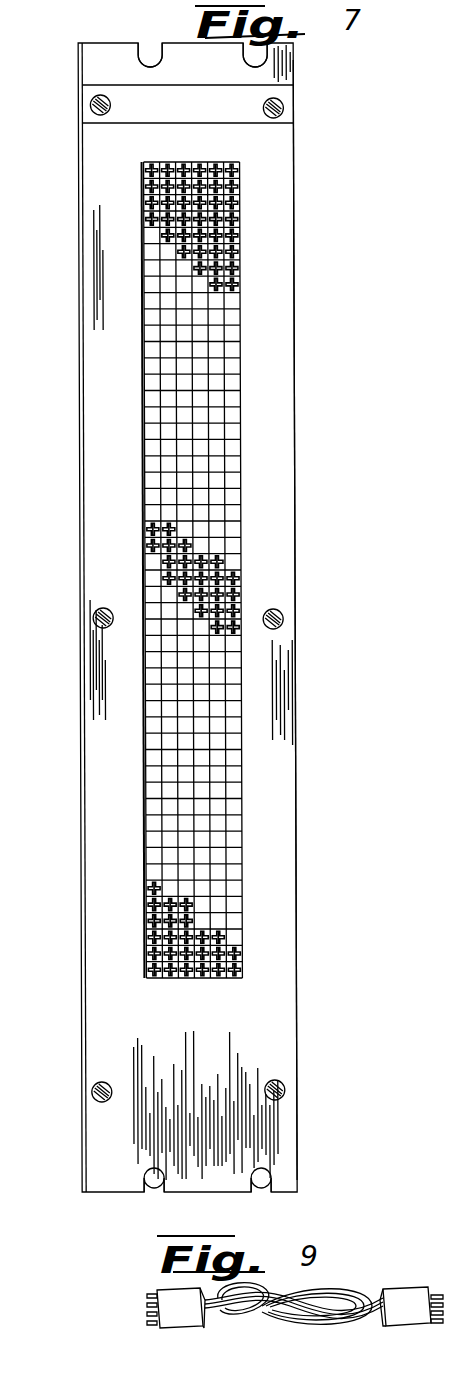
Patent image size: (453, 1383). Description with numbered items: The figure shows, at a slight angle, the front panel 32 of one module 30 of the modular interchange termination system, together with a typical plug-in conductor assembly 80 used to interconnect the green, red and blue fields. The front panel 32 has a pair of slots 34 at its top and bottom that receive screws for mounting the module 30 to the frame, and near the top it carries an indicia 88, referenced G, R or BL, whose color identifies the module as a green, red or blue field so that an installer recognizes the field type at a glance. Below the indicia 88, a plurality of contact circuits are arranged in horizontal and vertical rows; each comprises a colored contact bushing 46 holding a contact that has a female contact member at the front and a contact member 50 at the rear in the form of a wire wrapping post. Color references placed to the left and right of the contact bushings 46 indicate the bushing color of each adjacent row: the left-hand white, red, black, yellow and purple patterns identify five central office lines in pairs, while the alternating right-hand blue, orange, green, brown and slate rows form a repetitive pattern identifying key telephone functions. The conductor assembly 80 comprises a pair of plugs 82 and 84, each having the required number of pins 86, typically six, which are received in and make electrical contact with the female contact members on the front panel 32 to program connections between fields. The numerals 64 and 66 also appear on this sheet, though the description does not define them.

In FIG. 7, the module 30 is at (293, 70).
In FIG. 7, the front panel 32 is at (285, 171).
In FIG. 7, the slots 34 is at (255, 66).
In FIG. 7, the contact bushing 46 is at (233, 301).
In FIG. 7, the contact member 50 is at (452, 336).
In FIG. 7, the connector 64 is at (452, 605).
In FIG. 7, the mounting screws 66 is at (90, 107).
In FIG. 7, the indicia 88 is at (245, 124).
In FIG. 9, the plug-in conductor assembly 80 is at (298, 1300).
In FIG. 9, the plug 82 is at (172, 1294).
In FIG. 9, the plug 84 is at (425, 1294).
In FIG. 9, the pins 86 is at (148, 1326).